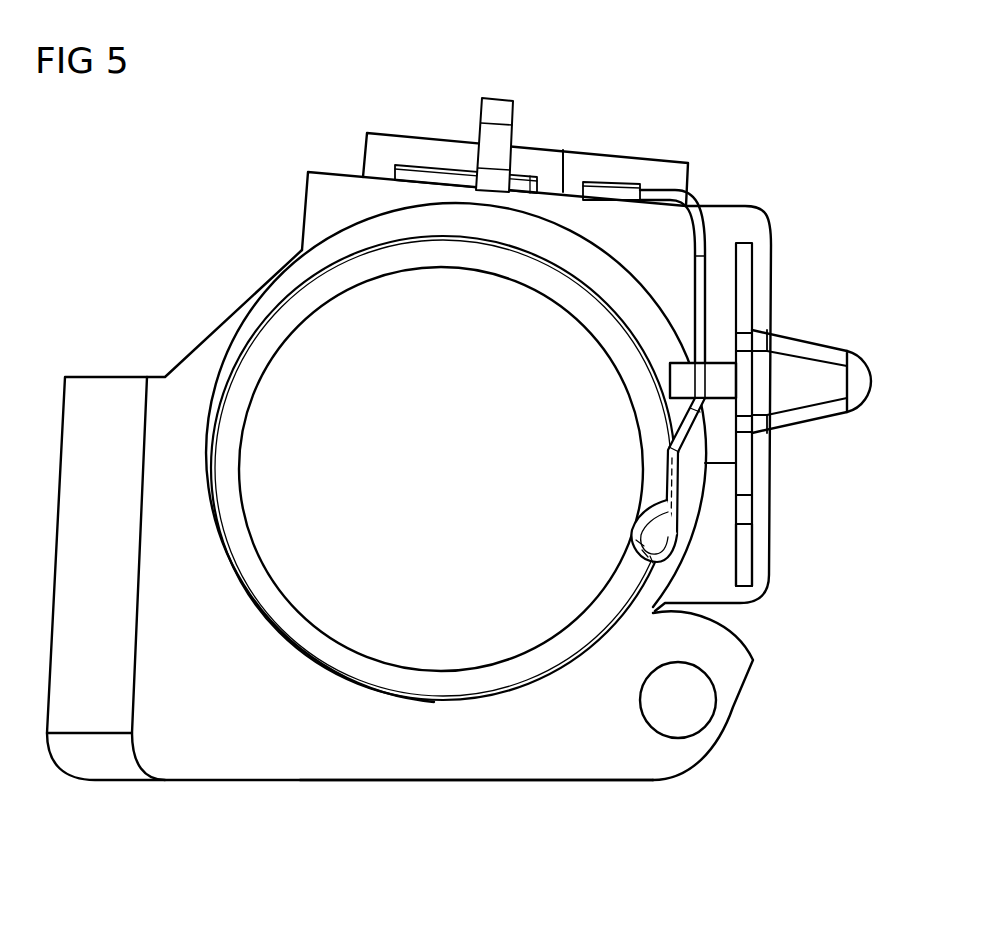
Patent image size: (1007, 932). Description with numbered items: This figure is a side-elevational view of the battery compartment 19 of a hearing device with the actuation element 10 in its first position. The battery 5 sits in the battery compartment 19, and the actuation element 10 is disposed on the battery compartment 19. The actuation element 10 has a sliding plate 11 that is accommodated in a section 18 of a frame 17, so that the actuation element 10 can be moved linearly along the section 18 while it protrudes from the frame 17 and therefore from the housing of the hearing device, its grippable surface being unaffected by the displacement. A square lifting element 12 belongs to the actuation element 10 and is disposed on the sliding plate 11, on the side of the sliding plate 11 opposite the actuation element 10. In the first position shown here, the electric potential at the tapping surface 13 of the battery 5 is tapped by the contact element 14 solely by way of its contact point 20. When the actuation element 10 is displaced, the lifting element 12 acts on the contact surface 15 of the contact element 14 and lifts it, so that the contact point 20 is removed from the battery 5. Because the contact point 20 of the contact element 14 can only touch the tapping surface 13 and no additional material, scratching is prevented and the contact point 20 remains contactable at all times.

The battery 5 is at (511, 633).
The actuation element 10 is at (855, 362).
The sliding plate 11 is at (745, 273).
The lifting element 12 is at (680, 383).
The tapping surface 13 is at (442, 687).
The contact element 14 is at (695, 273).
The contact surface 15 is at (670, 438).
The frame 17 is at (725, 220).
The section 18 is at (746, 554).
The battery compartment 19 is at (706, 806).
The contact point 20 is at (647, 545).